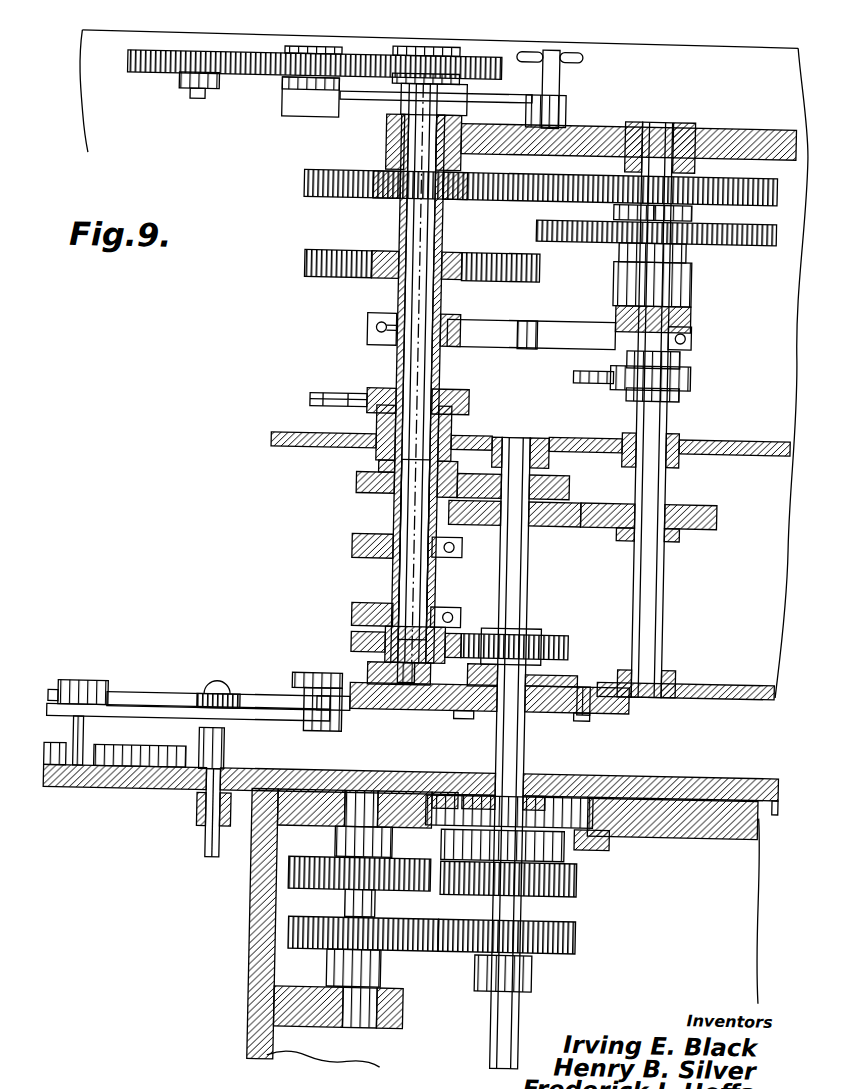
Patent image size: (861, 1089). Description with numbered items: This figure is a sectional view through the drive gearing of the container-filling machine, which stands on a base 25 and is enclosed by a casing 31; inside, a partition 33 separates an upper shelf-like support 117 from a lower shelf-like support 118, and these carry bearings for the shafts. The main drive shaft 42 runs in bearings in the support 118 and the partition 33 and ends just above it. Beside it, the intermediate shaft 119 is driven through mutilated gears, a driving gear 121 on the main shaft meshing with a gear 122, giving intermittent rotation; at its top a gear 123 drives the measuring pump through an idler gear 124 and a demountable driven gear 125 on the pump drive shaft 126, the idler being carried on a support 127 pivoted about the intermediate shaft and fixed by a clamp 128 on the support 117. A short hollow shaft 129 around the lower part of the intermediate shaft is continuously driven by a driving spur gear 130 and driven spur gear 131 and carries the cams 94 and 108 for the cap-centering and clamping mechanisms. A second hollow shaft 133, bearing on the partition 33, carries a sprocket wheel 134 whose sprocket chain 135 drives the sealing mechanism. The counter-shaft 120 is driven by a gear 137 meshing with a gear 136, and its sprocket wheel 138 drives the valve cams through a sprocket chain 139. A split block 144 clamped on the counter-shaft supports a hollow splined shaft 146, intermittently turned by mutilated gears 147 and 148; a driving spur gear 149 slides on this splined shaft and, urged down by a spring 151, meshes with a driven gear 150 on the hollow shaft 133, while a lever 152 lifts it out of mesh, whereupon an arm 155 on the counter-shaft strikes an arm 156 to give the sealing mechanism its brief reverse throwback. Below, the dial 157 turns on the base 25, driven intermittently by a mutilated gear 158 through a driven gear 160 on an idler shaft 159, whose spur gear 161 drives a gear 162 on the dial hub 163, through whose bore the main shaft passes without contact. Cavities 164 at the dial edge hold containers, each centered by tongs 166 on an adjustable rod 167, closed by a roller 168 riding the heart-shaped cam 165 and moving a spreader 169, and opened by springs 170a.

The casing 31 is at (80, 70).
The base 25 is at (274, 916).
The partition 33 is at (285, 439).
The main drive shaft 42 is at (524, 588).
The cam 94 is at (356, 614).
The cam 108 is at (362, 548).
The shelf-like support 117 is at (749, 133).
The shelf-like support 118 is at (733, 679).
The intermediate shaft 119 is at (424, 577).
The counter-shaft 120 is at (663, 590).
The driving gear 121 is at (575, 642).
The gear 122 is at (359, 647).
The gear 123 is at (468, 61).
The idler gear 124 is at (340, 52).
The driven gear 125 is at (143, 76).
The drive shaft of the measuring pump 126 is at (183, 105).
The support 127 is at (353, 99).
The clamp 128 is at (560, 124).
The hollow shaft 129 is at (396, 524).
The driving spur gear 130 is at (572, 482).
The driven spur gear 131 is at (359, 484).
The hollow shaft 133 is at (392, 211).
The sprocket wheel 134 is at (470, 409).
The sprocket chain 135 is at (319, 395).
The gear 136 is at (719, 507).
The gear 137 is at (557, 524).
The sprocket wheel 138 is at (684, 382).
The sprocket chain 139 is at (572, 372).
The split block 144 is at (690, 312).
The hollow splined shaft 146 is at (613, 209).
The gear 147 is at (310, 180).
The gear 148 is at (772, 184).
The driving spur gear 149 is at (761, 243).
The driven gear 150 is at (309, 267).
The spring 151 is at (686, 217).
The lever 152 is at (690, 280).
The arm 155 is at (572, 330).
The arm 156 is at (484, 326).
The dial 157 is at (614, 779).
The mutilated gear 158 is at (581, 937).
The idler shaft 159 is at (380, 903).
The driven gear 160 is at (408, 953).
The spur gear 161 is at (318, 855).
The gear 162 is at (587, 880).
The hub 163 is at (579, 851).
The cavity 164 is at (137, 754).
The heart-shaped cam 165 is at (446, 705).
The tongs 166 is at (138, 698).
The rod 167 is at (226, 761).
The roller 168 is at (319, 689).
The spreader 169 is at (351, 719).
The spring 170a is at (236, 699).